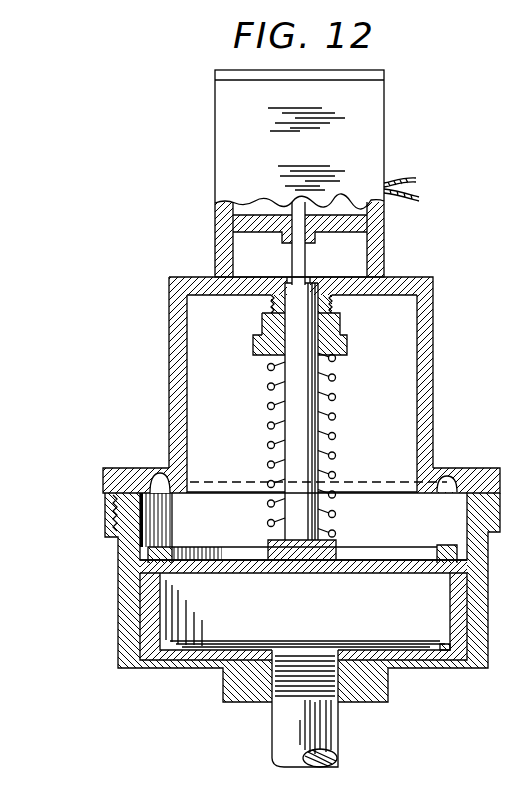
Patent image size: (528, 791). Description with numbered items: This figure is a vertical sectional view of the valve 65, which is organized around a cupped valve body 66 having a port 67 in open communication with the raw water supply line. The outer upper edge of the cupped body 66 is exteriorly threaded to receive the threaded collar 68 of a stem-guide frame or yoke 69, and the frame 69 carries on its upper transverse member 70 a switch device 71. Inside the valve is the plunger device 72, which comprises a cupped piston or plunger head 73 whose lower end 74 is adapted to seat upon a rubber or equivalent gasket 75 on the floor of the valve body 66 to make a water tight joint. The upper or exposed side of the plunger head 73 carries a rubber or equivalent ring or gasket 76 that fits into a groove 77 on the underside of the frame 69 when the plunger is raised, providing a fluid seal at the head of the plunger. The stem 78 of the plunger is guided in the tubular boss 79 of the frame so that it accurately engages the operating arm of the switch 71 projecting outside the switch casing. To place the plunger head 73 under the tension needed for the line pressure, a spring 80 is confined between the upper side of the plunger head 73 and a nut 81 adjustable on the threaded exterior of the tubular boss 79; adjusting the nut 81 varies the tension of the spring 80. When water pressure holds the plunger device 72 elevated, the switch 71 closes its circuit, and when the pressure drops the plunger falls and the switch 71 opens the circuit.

The valve 65 is at (496, 352).
The cupped valve body 66 is at (118, 606).
The port 67 is at (108, 520).
The threaded collar 68 is at (103, 492).
The stem-guide frame 69 is at (170, 379).
The upper transverse member 70 is at (413, 277).
The switch device 71 is at (243, 157).
The plunger device 72 is at (284, 435).
The cupped plunger head 73 is at (390, 573).
The lower end 74 is at (455, 625).
The gasket 75 is at (467, 653).
The ring 76 is at (163, 547).
The groove 77 is at (160, 471).
The stem 78 is at (300, 428).
The tubular boss 79 is at (339, 318).
The spring 80 is at (338, 389).
The nut 81 is at (347, 348).